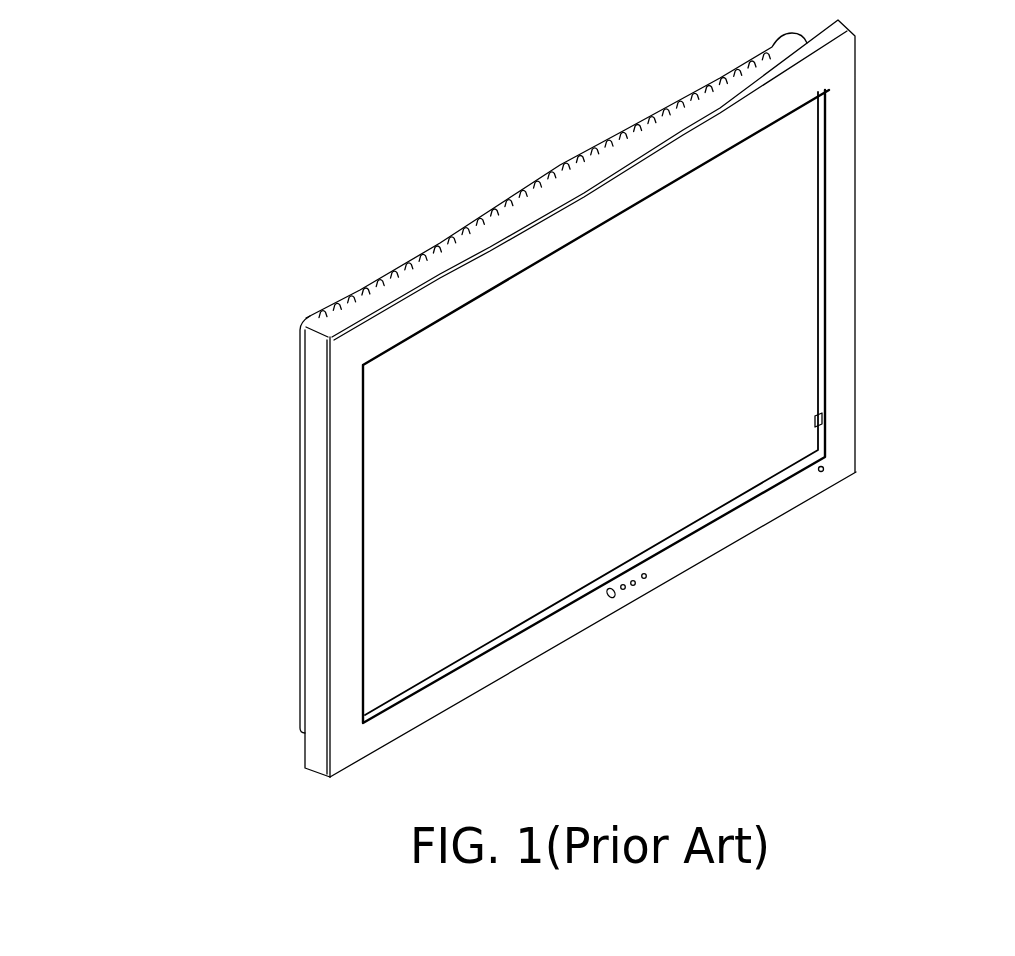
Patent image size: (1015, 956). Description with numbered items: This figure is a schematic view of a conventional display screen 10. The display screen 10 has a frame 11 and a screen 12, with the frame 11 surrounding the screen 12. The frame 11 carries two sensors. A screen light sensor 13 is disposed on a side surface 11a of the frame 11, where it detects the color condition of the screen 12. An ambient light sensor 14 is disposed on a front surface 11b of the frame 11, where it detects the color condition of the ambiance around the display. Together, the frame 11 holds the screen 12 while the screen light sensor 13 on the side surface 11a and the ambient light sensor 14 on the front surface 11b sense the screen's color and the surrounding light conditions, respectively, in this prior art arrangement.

The display screen 10 is at (180, 123).
The frame 11 is at (838, 266).
The side surface 11a is at (822, 317).
The front surface 11b is at (845, 447).
The screen 12 is at (793, 219).
The screen light sensor 13 is at (815, 418).
The ambient light sensor 14 is at (824, 470).